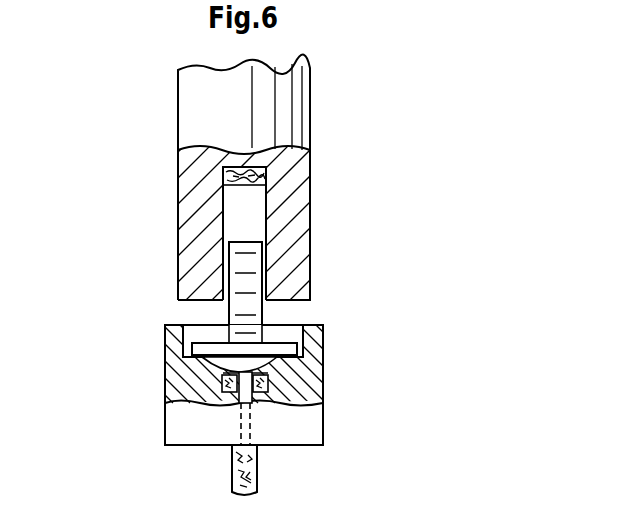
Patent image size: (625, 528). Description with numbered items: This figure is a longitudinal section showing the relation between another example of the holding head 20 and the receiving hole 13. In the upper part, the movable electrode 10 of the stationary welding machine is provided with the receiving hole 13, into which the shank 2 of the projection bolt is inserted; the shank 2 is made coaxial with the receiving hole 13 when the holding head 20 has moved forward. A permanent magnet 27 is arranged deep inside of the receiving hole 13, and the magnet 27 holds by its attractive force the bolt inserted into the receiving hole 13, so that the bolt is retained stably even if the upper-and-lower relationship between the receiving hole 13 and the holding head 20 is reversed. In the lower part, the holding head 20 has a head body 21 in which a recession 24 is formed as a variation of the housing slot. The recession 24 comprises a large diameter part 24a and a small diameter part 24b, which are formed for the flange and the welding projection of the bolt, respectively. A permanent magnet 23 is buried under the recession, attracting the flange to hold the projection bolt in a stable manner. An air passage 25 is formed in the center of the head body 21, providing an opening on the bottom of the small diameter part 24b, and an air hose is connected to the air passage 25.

The movable electrode 10 is at (178, 104).
The receiving hole 13 is at (232, 203).
The permanent magnet 27 is at (268, 182).
The shank 2 is at (253, 233).
The recession 24 is at (258, 328).
The large diameter part 24a is at (300, 322).
The small diameter part 24b is at (285, 369).
The permanent magnet 23 is at (168, 370).
The head body 21 is at (324, 425).
The holding head 20 is at (229, 385).
The air passage 25 is at (220, 393).